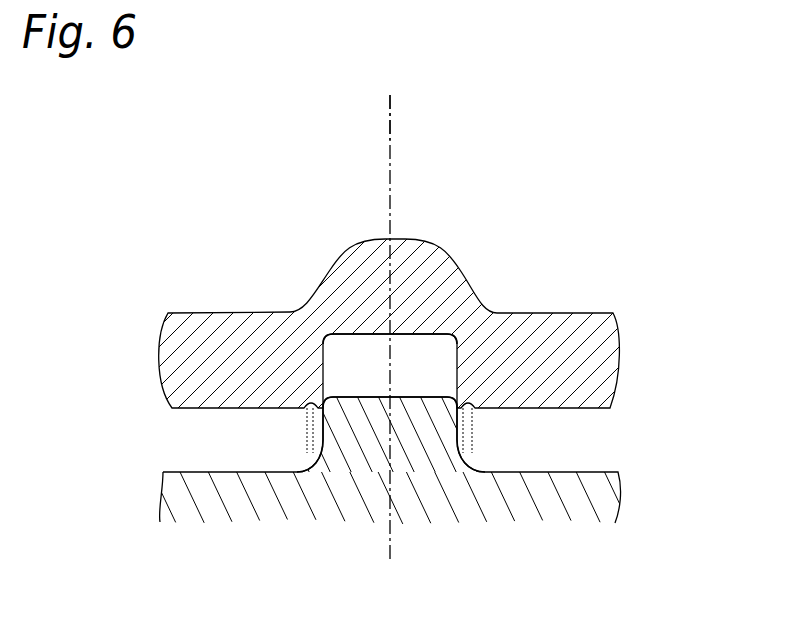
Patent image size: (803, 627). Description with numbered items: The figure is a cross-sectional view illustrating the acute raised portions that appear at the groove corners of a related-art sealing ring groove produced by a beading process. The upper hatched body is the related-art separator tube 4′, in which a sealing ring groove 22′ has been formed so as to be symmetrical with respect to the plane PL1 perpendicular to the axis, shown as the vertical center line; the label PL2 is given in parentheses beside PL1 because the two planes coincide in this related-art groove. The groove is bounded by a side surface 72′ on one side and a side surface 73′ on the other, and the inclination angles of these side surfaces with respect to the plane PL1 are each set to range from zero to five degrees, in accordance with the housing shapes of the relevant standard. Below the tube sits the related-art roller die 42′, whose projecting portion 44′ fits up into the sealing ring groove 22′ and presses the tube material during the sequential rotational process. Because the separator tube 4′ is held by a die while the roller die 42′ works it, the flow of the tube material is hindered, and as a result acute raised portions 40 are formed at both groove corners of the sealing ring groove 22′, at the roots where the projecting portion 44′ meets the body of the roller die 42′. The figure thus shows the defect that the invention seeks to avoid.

The separator tube 4′ is at (623, 342).
The roller die 42′ is at (622, 497).
The sealing ring groove 22′ is at (360, 332).
The side surface 72′ is at (330, 364).
The side surface 73′ is at (470, 376).
The acute raised portion 40 is at (298, 474).
The projecting portion 44′ is at (403, 458).
The plane perpendicular to the axis PL1 is at (384, 131).
The parting line 2 PL2 is at (330, 123).